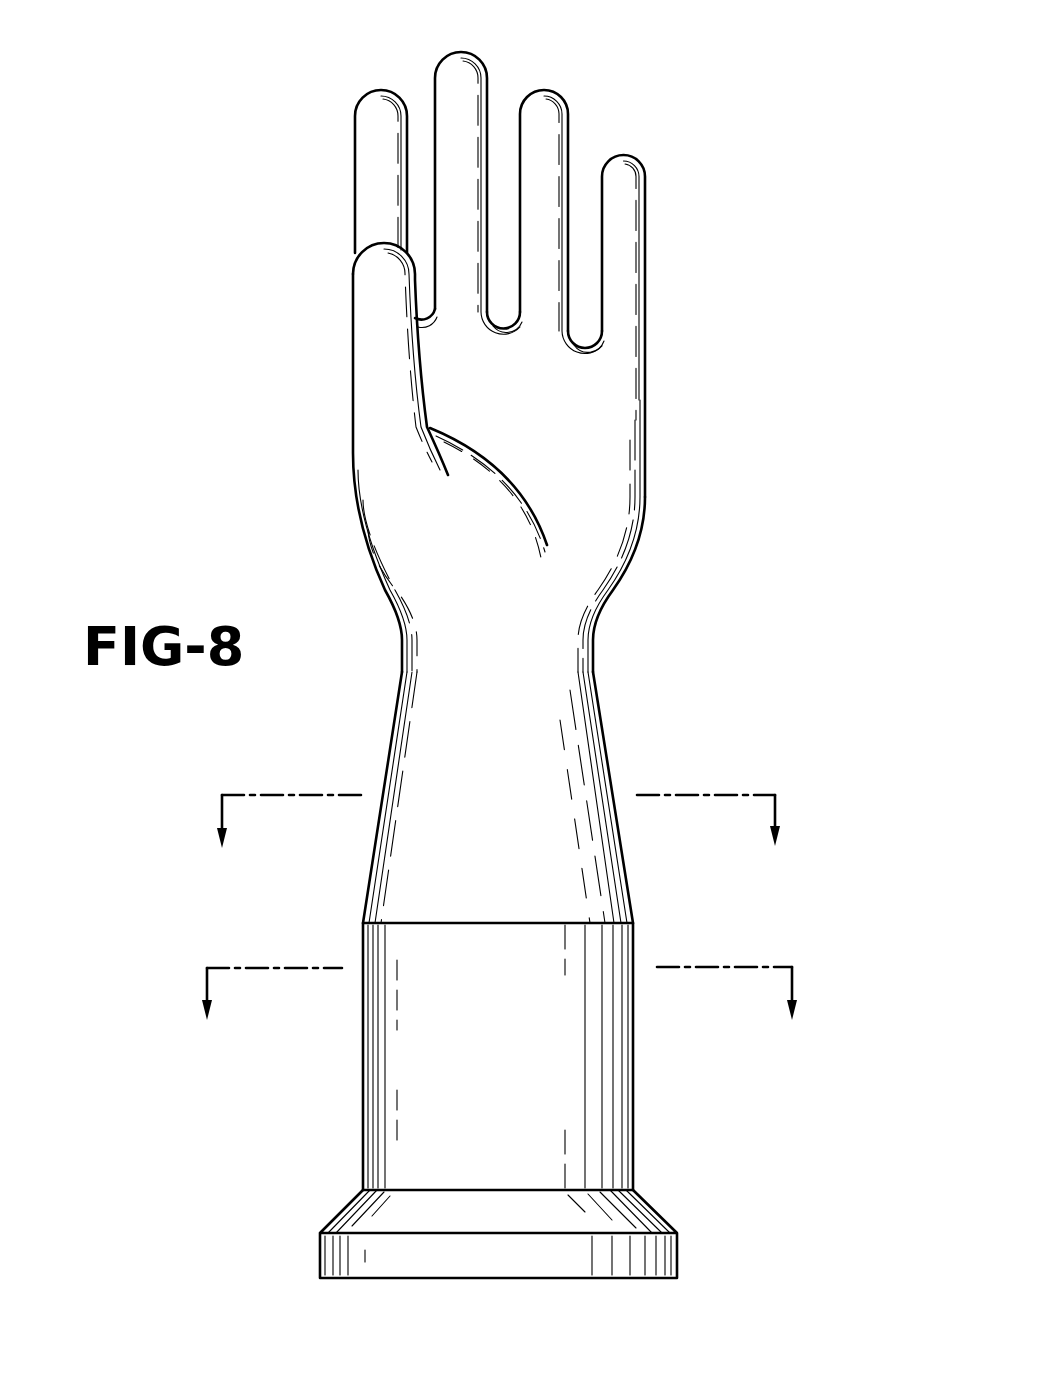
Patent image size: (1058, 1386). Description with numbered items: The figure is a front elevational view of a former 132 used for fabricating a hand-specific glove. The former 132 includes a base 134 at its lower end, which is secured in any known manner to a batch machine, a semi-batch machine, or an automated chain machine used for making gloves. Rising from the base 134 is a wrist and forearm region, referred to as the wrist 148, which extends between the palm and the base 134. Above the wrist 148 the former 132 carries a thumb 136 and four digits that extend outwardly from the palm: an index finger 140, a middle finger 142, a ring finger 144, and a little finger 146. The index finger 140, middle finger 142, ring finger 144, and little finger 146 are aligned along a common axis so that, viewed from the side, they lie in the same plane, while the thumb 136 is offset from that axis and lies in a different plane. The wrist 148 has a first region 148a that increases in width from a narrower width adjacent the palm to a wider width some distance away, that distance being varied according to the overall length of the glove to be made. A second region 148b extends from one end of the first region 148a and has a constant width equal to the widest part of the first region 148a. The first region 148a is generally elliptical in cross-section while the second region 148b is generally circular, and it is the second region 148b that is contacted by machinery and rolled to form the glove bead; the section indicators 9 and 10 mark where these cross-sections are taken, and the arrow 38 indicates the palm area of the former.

The former 132 is at (700, 272).
The base 134 is at (678, 1205).
The thumb 136 is at (372, 300).
The index finger 140 is at (374, 105).
The middle finger 142 is at (455, 65).
The ring finger 144 is at (535, 100).
The little finger 146 is at (615, 168).
The palm portion 38 is at (533, 442).
The wrist and forearm 148 is at (455, 797).
The first region 148a is at (440, 866).
The second region 148b is at (417, 1060).
The section line 9- 9 is at (499, 838).
The section line 10- 10 is at (499, 1010).